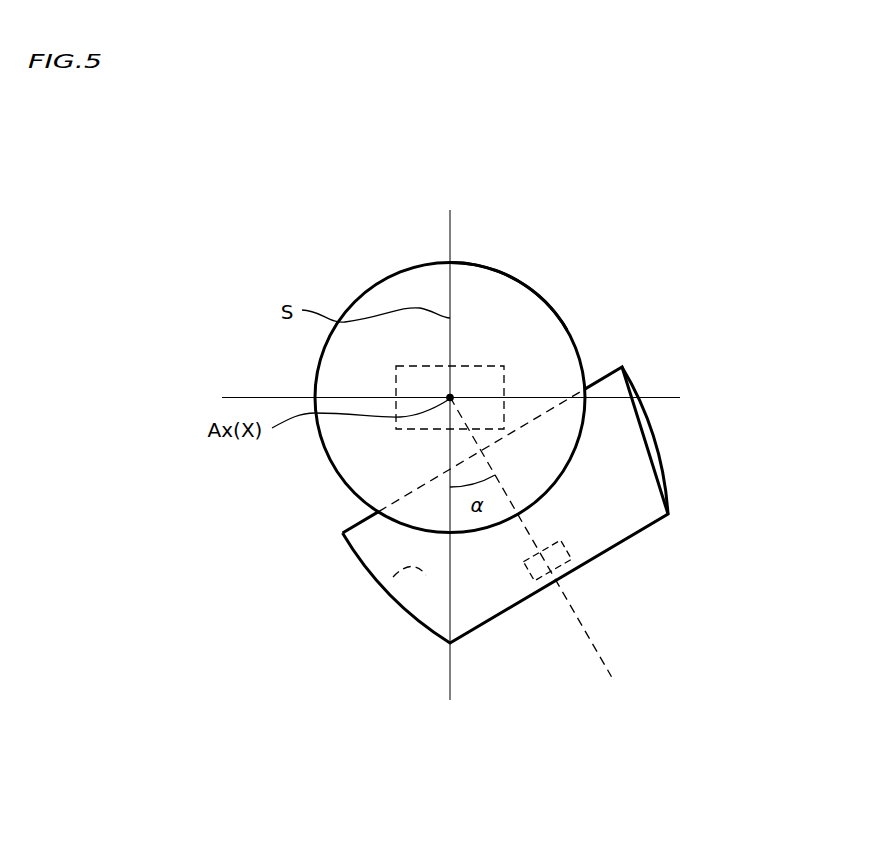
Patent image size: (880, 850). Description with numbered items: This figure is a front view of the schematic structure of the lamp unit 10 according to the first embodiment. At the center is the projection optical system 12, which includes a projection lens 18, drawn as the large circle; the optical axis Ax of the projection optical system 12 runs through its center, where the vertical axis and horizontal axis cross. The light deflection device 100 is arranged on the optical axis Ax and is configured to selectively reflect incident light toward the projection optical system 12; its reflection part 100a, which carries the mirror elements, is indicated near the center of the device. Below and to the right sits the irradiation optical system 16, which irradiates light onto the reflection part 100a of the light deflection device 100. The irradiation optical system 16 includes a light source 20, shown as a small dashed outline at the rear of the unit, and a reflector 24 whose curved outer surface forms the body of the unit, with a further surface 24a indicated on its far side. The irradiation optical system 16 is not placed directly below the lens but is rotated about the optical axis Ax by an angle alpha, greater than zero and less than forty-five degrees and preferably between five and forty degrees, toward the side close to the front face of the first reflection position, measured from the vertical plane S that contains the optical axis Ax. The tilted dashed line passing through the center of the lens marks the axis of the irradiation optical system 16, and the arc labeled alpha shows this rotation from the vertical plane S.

The lamp unit 10 is at (467, 749).
The projection optical system 12 is at (513, 253).
The projection lens 18 is at (530, 285).
The light deflection device 100 is at (480, 364).
The reflection part 100a is at (491, 387).
The irradiation optical system 16 is at (515, 505).
The reflector 24 is at (667, 485).
The lens inner surface 24a is at (395, 572).
The light source 20 is at (565, 548).